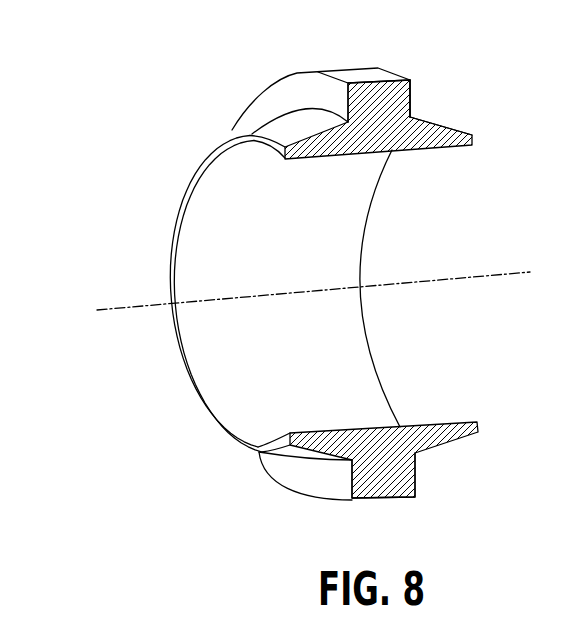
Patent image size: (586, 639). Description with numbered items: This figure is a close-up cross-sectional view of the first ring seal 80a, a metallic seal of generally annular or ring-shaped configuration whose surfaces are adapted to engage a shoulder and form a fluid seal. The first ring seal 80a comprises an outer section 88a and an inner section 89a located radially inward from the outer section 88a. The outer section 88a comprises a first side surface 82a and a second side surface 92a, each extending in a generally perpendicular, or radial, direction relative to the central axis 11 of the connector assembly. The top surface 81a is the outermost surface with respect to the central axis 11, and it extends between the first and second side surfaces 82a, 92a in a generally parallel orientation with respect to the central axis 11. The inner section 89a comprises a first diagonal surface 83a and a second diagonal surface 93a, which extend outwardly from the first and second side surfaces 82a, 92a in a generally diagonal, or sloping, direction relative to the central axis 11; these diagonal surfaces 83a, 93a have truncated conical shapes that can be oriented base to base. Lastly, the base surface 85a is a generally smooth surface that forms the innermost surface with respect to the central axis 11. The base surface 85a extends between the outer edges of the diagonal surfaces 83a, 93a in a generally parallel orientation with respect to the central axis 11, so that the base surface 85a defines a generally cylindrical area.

The first ring seal 80a is at (127, 62).
The top surface 81a is at (360, 73).
The first side surface 82a is at (295, 80).
The first diagonal surface 83a is at (277, 122).
The base surface 85a is at (450, 147).
The outer section 88a is at (388, 480).
The inner section 89a is at (392, 445).
The second side surface 92a is at (410, 90).
The second diagonal surface 93a is at (442, 120).
The central axis 11 is at (130, 307).